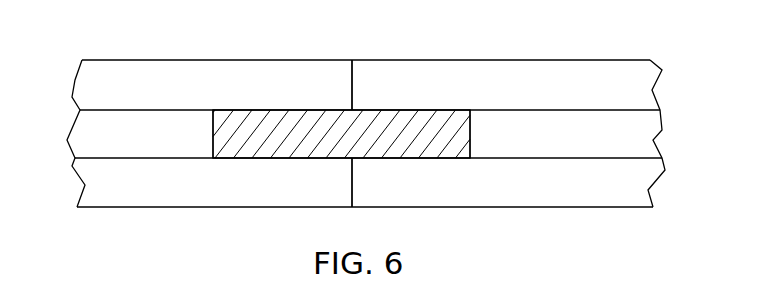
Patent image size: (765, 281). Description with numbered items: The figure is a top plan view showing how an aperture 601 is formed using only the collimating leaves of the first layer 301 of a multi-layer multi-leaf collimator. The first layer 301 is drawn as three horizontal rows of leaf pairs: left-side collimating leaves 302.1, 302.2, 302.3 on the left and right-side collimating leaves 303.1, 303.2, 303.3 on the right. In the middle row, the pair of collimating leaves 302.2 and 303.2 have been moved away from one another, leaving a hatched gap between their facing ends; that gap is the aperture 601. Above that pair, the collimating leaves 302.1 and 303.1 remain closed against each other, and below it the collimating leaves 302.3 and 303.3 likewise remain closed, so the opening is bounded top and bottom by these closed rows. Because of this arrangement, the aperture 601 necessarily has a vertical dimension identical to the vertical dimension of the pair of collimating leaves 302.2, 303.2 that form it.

The first layer 301 is at (367, 237).
The left-side collimating leaf 302.1 is at (217, 92).
The left-side collimating leaf 302.2 is at (149, 142).
The left-side collimating leaf 302.3 is at (180, 190).
The right-side collimating leaf 303.1 is at (472, 92).
The right-side collimating leaf 303.2 is at (547, 142).
The right-side collimating leaf 303.3 is at (544, 190).
The aperture 601 is at (286, 118).